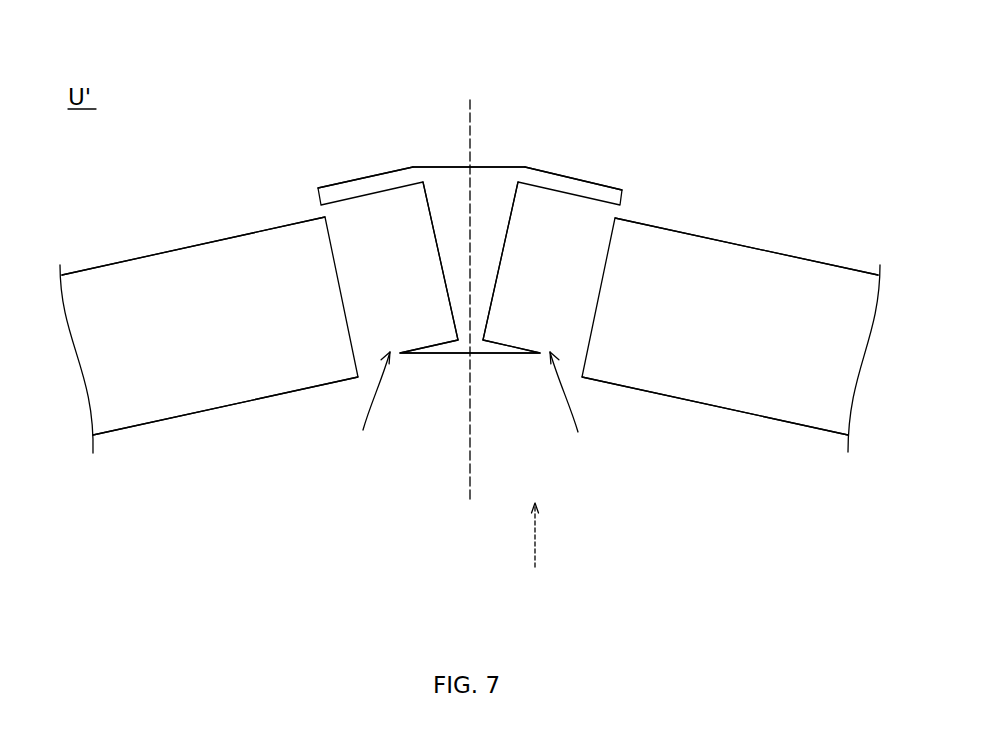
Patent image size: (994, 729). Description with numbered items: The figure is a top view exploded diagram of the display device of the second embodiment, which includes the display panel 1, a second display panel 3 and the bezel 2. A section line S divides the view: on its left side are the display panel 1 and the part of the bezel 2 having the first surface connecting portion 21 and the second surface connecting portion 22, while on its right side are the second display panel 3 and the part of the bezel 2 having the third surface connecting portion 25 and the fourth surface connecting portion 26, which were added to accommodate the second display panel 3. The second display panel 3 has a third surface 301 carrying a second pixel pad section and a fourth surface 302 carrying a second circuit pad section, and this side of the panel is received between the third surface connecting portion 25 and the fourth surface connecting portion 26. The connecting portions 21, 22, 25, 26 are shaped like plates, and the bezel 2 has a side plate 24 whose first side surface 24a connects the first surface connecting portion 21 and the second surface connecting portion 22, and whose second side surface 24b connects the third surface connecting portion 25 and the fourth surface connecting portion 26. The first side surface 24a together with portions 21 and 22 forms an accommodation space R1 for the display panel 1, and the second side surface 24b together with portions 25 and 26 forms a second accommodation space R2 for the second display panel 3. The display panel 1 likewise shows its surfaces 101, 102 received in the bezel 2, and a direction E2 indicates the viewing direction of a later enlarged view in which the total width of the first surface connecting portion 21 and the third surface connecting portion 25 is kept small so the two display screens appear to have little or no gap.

The display panel 1 is at (158, 384).
The first surface of first pole 101 is at (272, 395).
The second surface of first pole 102 is at (232, 240).
The bezel 2 is at (447, 162).
The first surface connecting portion 21 is at (458, 353).
The second surface connecting portion 22 is at (360, 190).
The side plate 24 is at (495, 177).
The first side surface 24a is at (432, 233).
The second side surface 24b is at (507, 233).
The third surface connecting portion 25 is at (480, 353).
The fourth surface connecting portion 26 is at (582, 190).
The second display panel 3 is at (816, 397).
The third surface 301 is at (668, 395).
The fourth surface 302 is at (708, 240).
The accommodation space R1 is at (366, 412).
The second accommodation space R2 is at (575, 412).
The section line S is at (469, 306).
The direction E2 is at (539, 550).